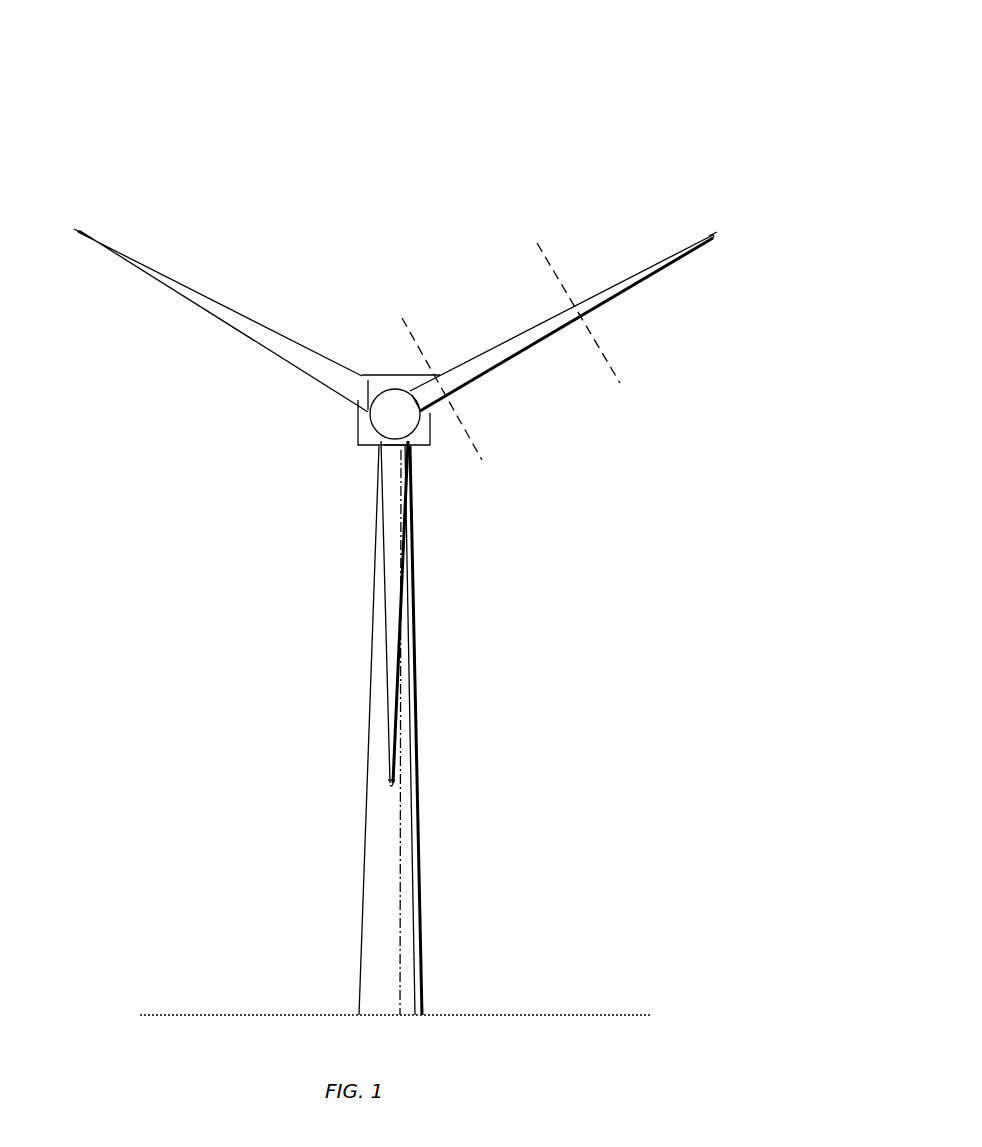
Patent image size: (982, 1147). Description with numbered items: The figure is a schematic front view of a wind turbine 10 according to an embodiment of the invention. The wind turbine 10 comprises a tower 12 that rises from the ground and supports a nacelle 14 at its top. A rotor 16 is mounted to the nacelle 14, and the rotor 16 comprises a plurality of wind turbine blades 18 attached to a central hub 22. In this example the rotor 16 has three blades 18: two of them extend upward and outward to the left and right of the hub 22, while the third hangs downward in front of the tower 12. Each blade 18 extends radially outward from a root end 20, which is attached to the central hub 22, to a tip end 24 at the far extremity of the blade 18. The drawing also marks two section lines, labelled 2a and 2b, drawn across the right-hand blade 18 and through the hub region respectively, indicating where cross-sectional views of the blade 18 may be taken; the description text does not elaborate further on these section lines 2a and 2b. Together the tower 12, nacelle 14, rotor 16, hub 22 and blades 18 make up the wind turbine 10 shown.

The wind turbine 10 is at (586, 58).
The tower 12 is at (421, 868).
The nacelle 14 is at (357, 423).
The rotor 16 is at (284, 451).
The wind turbine blade 18 is at (243, 323).
The root end 20 is at (366, 394).
The central hub 22 is at (378, 425).
The tip end 24 is at (78, 232).
The section line 2a is at (582, 313).
The section line 2b is at (445, 390).